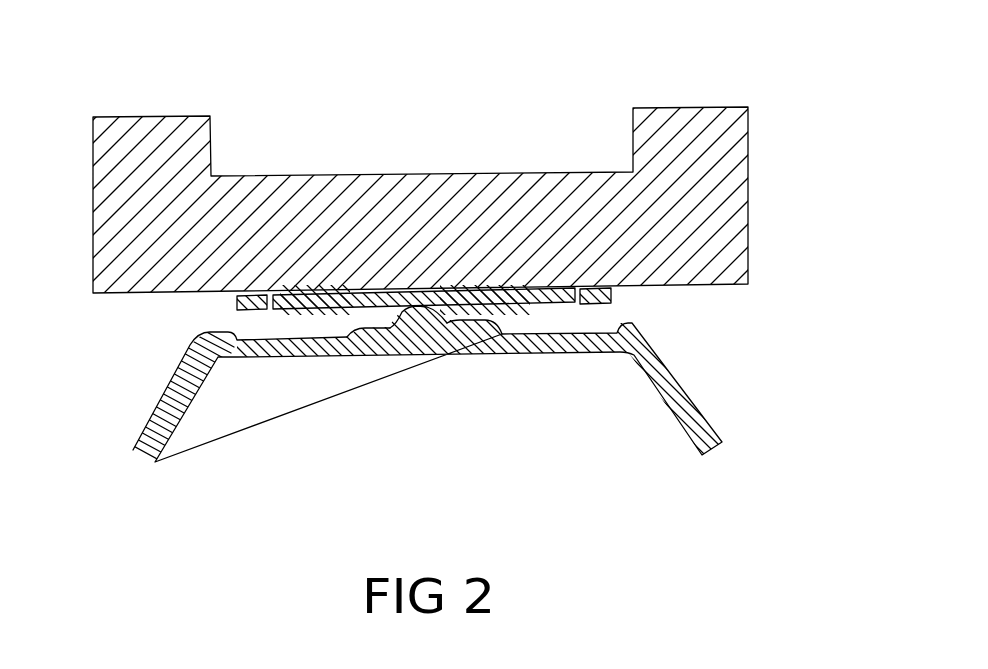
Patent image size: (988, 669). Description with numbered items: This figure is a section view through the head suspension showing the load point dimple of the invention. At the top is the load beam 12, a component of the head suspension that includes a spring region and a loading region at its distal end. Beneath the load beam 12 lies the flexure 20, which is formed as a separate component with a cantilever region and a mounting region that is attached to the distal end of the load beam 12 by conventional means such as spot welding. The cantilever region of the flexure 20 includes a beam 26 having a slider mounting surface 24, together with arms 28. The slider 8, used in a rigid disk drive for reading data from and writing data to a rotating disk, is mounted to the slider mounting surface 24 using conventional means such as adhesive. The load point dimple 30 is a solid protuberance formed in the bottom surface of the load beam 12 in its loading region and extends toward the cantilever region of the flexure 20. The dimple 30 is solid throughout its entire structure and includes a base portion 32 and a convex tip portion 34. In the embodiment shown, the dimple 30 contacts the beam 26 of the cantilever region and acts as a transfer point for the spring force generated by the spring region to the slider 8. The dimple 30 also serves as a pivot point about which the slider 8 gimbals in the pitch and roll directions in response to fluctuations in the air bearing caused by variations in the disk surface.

The slider 8 is at (731, 131).
The load beam 12 is at (697, 433).
The flexure 20 is at (365, 300).
The slider mounting surface 24 is at (480, 295).
The beam 26 is at (298, 300).
The arms 28 is at (237, 302).
The load point dimple 30 is at (445, 325).
The base portion 32 is at (345, 337).
The convex tip portion 34 is at (490, 322).